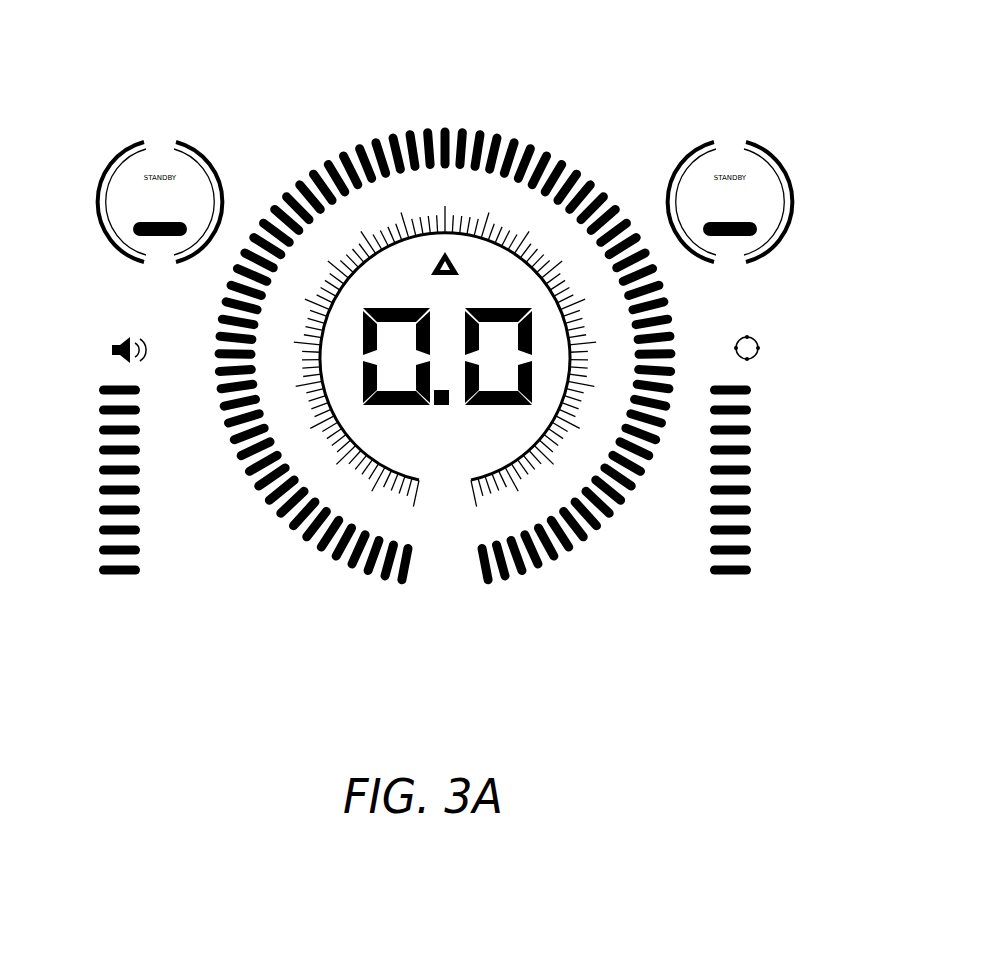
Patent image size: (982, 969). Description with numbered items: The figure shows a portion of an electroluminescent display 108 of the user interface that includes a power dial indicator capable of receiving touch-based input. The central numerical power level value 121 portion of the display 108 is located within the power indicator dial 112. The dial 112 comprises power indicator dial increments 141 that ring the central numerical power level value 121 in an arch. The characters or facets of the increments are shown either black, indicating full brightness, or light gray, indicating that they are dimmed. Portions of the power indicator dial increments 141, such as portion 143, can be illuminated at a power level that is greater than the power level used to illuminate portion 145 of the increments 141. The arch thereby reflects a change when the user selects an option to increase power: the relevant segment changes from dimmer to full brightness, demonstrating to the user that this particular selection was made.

The display 108 is at (449, 313).
The power indicator dial 112 is at (438, 313).
The central numerical power level value 121 is at (488, 309).
The power indicator dial increments 141 is at (438, 320).
The portion of the power indicator dial increments 143 is at (307, 500).
The portion of the power indicator dial increments 145 is at (438, 313).